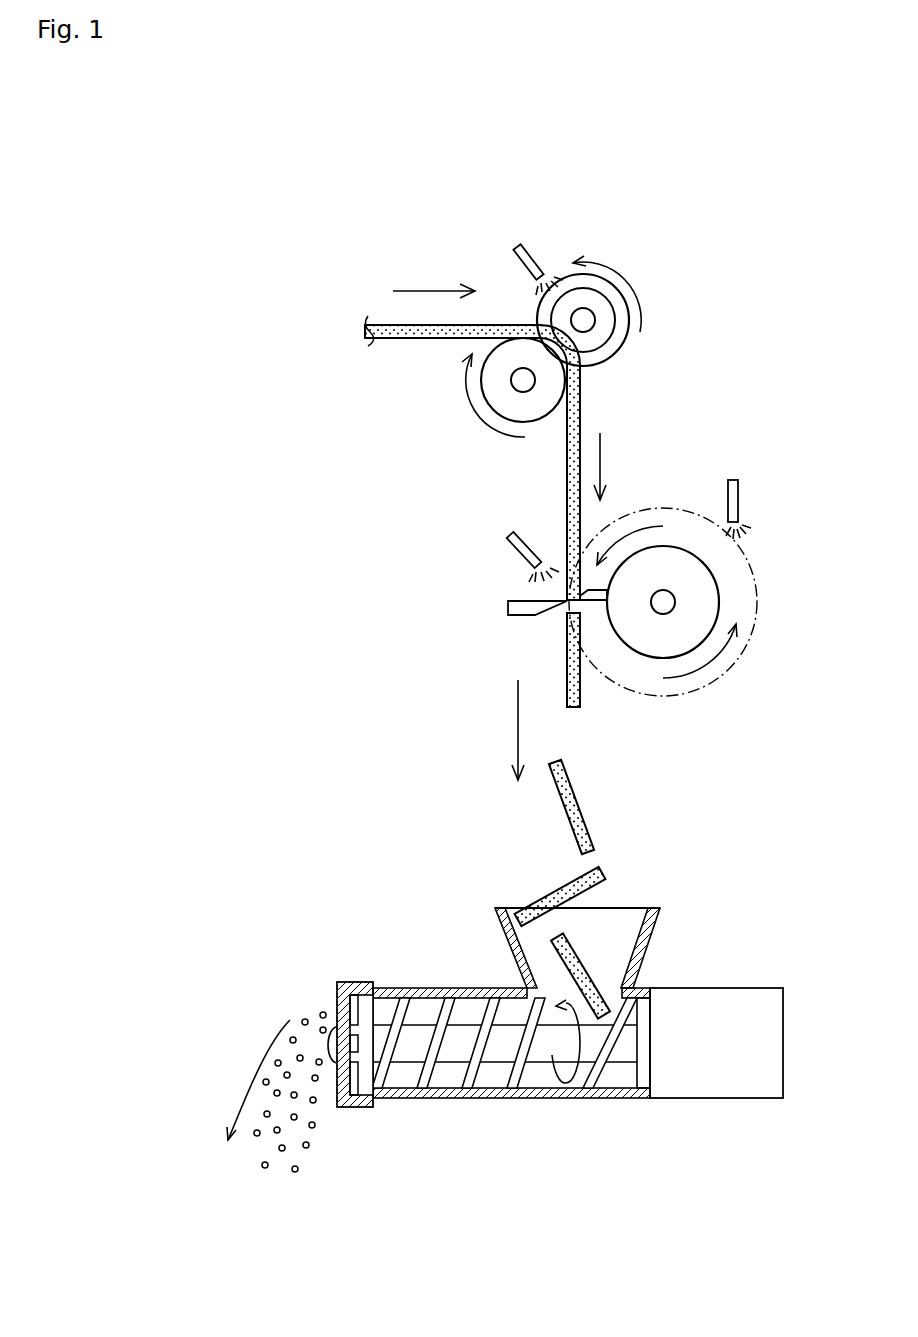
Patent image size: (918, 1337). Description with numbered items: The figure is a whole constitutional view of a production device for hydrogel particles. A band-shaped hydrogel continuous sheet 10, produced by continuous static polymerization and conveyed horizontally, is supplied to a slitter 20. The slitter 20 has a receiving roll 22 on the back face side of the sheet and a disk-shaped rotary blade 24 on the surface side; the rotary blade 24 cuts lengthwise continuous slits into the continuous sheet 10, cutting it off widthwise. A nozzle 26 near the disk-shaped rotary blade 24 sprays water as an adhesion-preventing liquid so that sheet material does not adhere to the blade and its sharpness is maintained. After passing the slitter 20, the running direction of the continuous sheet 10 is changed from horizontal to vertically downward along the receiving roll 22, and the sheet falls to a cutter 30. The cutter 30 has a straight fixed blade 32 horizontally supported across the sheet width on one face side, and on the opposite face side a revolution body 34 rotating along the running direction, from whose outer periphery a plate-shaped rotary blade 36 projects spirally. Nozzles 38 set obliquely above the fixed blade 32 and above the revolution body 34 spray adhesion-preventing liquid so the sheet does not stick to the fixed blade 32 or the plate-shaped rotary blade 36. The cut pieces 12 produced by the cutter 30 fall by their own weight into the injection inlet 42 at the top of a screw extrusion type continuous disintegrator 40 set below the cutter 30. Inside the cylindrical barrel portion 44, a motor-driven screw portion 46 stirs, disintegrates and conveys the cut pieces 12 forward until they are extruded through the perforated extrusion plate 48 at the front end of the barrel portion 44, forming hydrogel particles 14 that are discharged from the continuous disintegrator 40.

The continuous sheet 10 is at (422, 340).
The cut pieces 12 is at (582, 705).
The hydrogel particles 14 is at (295, 1170).
The slitter 20 is at (625, 350).
The receiving roll 22 is at (535, 415).
The disk-shaped rotary blade 24 is at (603, 352).
The nozzle 26 is at (540, 264).
The cutter 30 is at (672, 543).
The fixed blade 32 is at (535, 612).
The revolution body 34 is at (697, 587).
The plate-shaped rotary blade 36 is at (585, 657).
The nozzles 38 is at (520, 563).
The continuous disintegrator 40 is at (675, 988).
The injection inlet 42 is at (495, 922).
The barrel portion 44 is at (393, 1097).
The screw portion 46 is at (465, 1080).
The perforated extrusion plate 48 is at (337, 1008).